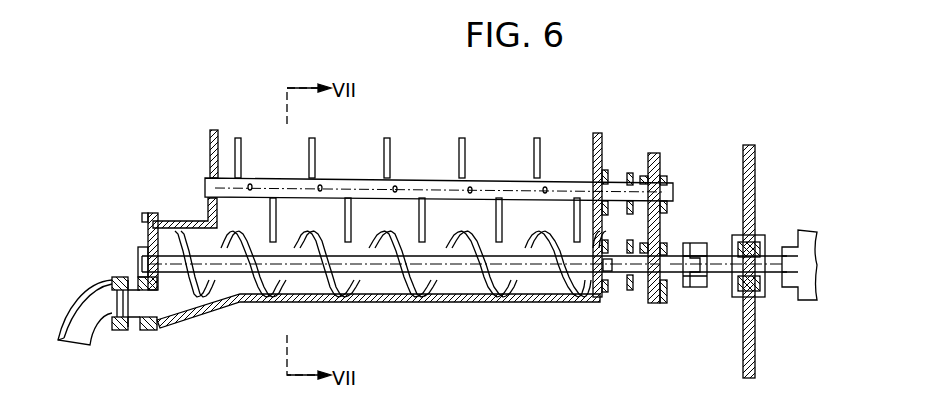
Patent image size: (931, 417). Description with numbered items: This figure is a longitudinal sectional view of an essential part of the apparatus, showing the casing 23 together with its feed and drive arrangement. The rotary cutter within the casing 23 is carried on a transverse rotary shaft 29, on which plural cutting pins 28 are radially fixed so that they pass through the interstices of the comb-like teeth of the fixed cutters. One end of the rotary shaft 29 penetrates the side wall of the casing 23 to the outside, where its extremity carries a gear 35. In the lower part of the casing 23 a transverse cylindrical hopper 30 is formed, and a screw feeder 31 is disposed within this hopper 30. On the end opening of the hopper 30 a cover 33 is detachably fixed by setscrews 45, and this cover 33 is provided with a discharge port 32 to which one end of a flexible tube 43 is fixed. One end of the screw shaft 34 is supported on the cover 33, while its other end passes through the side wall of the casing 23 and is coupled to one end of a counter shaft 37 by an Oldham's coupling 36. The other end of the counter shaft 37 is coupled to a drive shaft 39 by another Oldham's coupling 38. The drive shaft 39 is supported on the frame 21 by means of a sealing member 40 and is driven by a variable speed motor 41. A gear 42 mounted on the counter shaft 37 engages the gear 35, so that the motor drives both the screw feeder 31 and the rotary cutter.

The frame 21 is at (744, 150).
The casing 23 is at (596, 136).
The cutting pins 28 is at (316, 147).
The rotary shaft 29 is at (425, 186).
The hopper 30 is at (325, 302).
The screw feeder 31 is at (422, 292).
The discharge port 32 is at (137, 330).
The cover 33 is at (146, 250).
The screw shaft 34 is at (540, 282).
The gear 35 is at (652, 153).
The Oldham's coupling 36 is at (608, 276).
The counter shaft 37 is at (636, 274).
The Oldham's coupling 38 is at (700, 244).
The drive shaft 39 is at (716, 273).
The sealing member 40 is at (766, 250).
The variable speed motor 41 is at (806, 301).
The gear 42 is at (663, 304).
The flexible tube 43 is at (92, 292).
The setscrews 45 is at (145, 213).